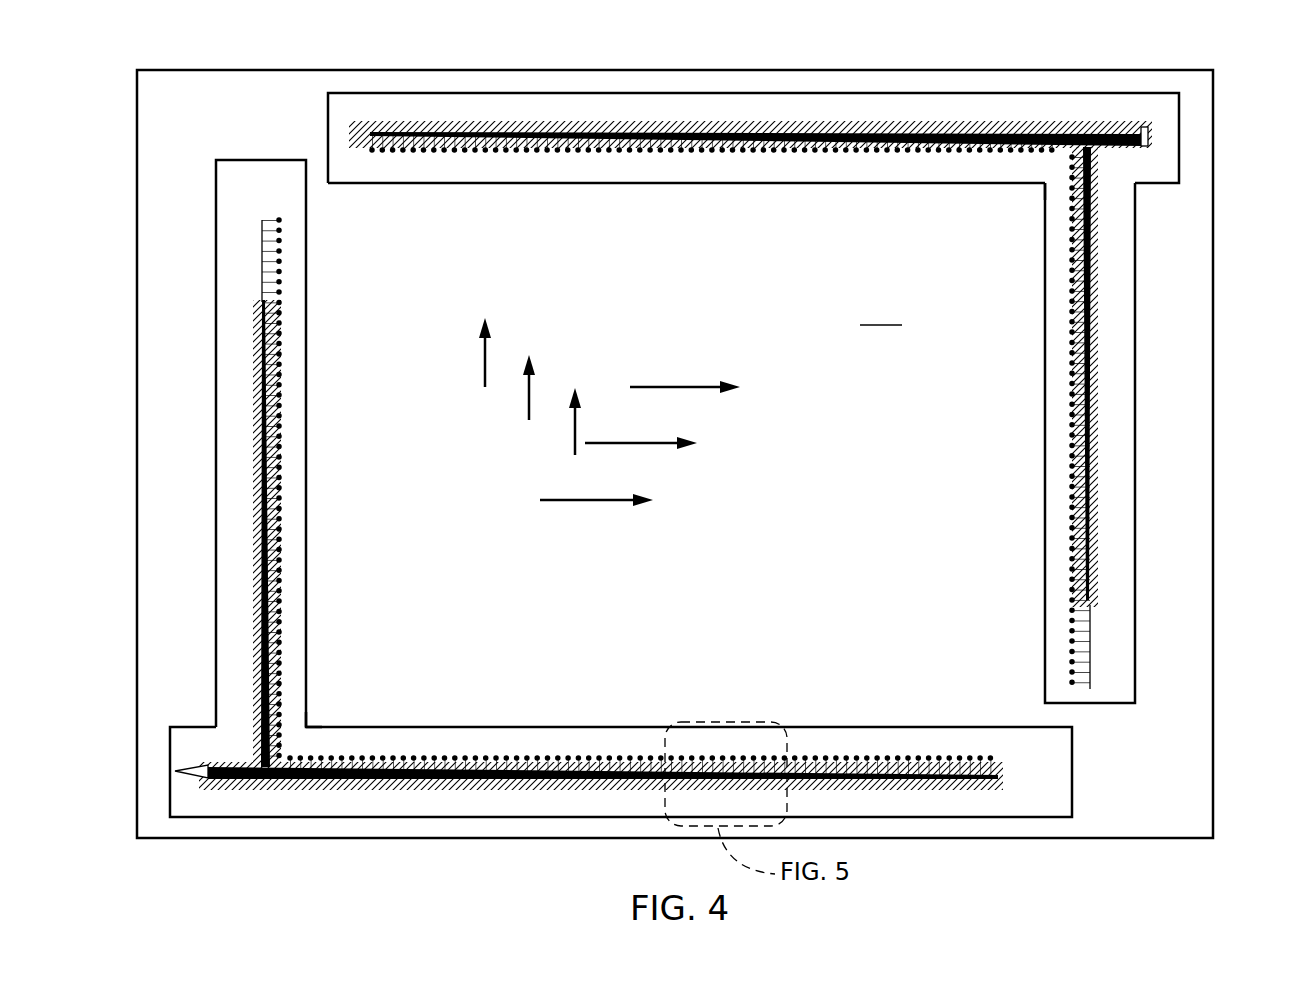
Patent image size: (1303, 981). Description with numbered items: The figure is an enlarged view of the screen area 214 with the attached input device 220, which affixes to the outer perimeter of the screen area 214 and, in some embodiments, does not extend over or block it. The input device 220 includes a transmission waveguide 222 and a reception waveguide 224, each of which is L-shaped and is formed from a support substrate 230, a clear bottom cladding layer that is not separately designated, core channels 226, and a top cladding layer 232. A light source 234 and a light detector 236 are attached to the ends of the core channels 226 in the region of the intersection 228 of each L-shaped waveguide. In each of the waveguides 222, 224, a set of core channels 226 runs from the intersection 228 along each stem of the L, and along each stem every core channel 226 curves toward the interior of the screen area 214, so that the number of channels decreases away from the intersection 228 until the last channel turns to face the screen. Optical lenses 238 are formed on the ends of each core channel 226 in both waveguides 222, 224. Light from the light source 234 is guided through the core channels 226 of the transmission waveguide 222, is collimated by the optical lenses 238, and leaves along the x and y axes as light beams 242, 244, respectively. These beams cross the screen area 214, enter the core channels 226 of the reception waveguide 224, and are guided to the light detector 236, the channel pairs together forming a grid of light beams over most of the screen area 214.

The screen area 214 is at (881, 314).
The input device 220 is at (320, 137).
The transmission waveguide 222 is at (475, 820).
The reception waveguide 224 is at (1146, 475).
The core channels 226 is at (263, 522).
The intersection 228 is at (1036, 194).
The support substrate 230 is at (216, 275).
The top cladding layer 232 is at (494, 122).
The light source 234 is at (175, 771).
The light detector 236 is at (1145, 127).
The optical lenses 238 is at (283, 261).
The light beams 242 is at (630, 443).
The light beams 244 is at (529, 410).